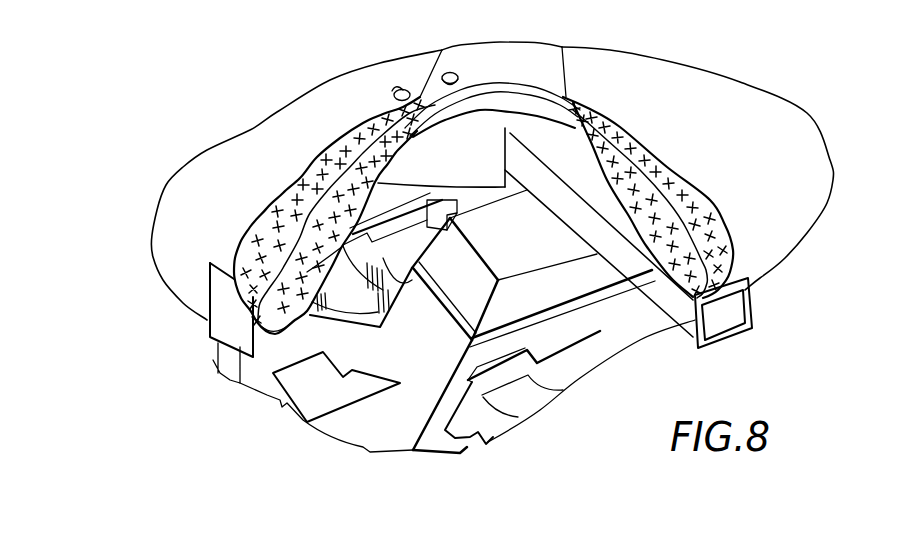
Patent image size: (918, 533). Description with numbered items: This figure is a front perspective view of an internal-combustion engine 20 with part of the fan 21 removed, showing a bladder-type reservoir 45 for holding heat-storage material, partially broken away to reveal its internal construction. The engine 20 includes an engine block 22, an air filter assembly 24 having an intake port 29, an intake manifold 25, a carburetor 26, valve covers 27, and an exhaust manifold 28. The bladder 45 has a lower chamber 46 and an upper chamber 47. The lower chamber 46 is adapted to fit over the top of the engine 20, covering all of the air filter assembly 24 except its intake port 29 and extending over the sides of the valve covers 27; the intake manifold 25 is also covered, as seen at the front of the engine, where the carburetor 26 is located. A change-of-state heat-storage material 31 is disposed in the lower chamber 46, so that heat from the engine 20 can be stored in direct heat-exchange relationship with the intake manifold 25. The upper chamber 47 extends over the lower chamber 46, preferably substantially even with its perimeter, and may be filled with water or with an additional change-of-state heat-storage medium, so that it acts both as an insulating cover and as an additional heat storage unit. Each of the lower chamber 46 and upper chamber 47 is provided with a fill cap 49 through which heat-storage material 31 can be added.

The internal-combustion engine 20 is at (361, 478).
The fan 21 is at (227, 320).
The engine block 22 is at (438, 357).
The air filter assembly 24 is at (467, 173).
The intake manifold 25 is at (347, 297).
The carburetor 26 is at (478, 194).
The valve covers 27 is at (543, 235).
The exhaust manifold 28 is at (763, 310).
The intake port 29 is at (723, 326).
The heat-storage medium 31 is at (271, 338).
The bladder-type reservoir 45 is at (334, 66).
The lower chamber 46 is at (464, 53).
The upper chamber 47 is at (279, 124).
The fill cap 49 is at (458, 76).